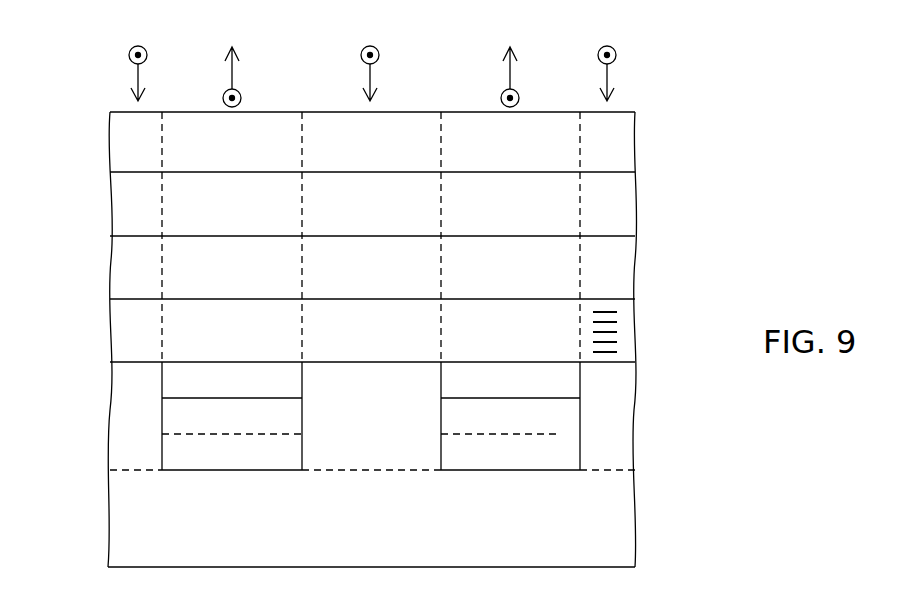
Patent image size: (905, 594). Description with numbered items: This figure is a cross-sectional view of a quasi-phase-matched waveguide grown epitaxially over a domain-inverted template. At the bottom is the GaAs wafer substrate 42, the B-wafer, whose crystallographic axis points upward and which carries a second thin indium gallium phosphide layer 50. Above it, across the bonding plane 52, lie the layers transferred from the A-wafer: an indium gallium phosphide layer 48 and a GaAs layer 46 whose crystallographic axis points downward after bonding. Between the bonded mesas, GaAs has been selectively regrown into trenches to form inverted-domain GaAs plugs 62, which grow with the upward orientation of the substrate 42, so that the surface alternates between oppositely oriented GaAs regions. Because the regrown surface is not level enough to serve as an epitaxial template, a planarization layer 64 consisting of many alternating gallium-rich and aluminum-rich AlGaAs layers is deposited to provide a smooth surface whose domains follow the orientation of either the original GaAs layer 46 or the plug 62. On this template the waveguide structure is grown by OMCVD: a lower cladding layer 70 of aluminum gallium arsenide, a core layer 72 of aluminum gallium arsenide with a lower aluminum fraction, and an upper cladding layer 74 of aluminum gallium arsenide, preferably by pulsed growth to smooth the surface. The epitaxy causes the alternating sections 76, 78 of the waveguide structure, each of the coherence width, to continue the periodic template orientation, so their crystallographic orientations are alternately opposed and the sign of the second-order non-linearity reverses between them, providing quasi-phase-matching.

The GaAs wafer substrate 42 is at (120, 535).
The GaAs layer 46 is at (160, 385).
The In0.5Ga0.5P layer 48 is at (160, 419).
The second In0.5Ga0.5P layer 50 is at (160, 457).
The bonding plane 52 is at (562, 433).
The inverted-domain GaAs plug 62 is at (110, 467).
The planarization layer 64 is at (125, 331).
The lower cladding layer 70 is at (122, 268).
The core layer 72 is at (122, 205).
The upper cladding layer 74 is at (125, 142).
The waveguide structure section 76 is at (197, 80).
The waveguide structure section 78 is at (343, 80).